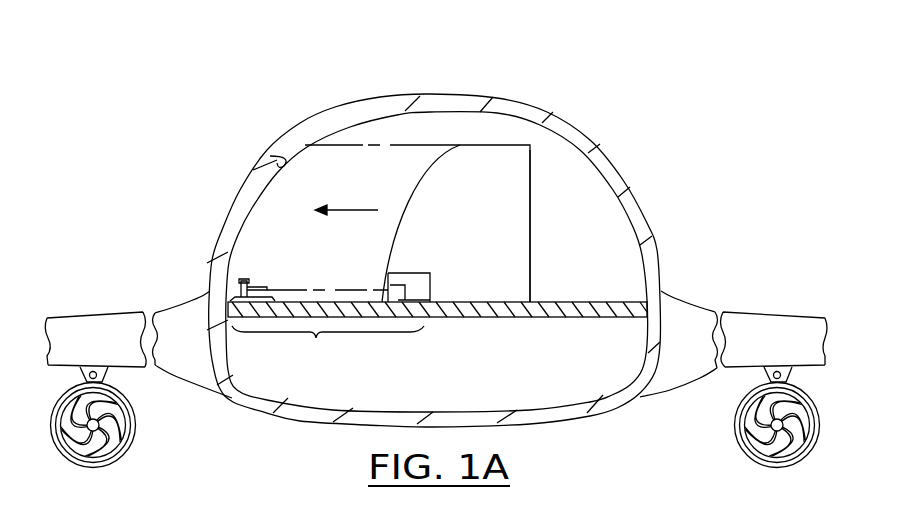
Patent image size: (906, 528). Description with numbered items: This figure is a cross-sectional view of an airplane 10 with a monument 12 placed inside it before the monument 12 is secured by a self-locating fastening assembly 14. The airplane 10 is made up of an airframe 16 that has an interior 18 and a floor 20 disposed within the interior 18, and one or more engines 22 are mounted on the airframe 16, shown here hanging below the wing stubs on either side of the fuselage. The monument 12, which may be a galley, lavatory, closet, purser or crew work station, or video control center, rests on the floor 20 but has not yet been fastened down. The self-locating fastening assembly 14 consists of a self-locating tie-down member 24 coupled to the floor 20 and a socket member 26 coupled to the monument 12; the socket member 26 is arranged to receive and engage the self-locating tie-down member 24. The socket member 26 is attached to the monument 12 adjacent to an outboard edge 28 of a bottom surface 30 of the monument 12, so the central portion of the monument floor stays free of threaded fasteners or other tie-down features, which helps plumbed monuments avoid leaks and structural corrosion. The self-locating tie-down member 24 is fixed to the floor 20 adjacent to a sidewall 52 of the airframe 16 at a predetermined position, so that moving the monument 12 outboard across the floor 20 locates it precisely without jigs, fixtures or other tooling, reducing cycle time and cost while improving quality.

The airplane 10 is at (269, 54).
The monument 12 is at (500, 203).
The self-locating fastening assembly 14 is at (328, 347).
The airframe 16 is at (303, 122).
The interior 18 is at (463, 135).
The floor 20 is at (573, 302).
The engines 22 is at (136, 440).
The self-locating tie-down member 24 is at (246, 283).
The socket member 26 is at (386, 280).
The outboard edge 28 is at (386, 276).
The bottom surface 30 is at (455, 305).
The sidewall 52 is at (270, 156).